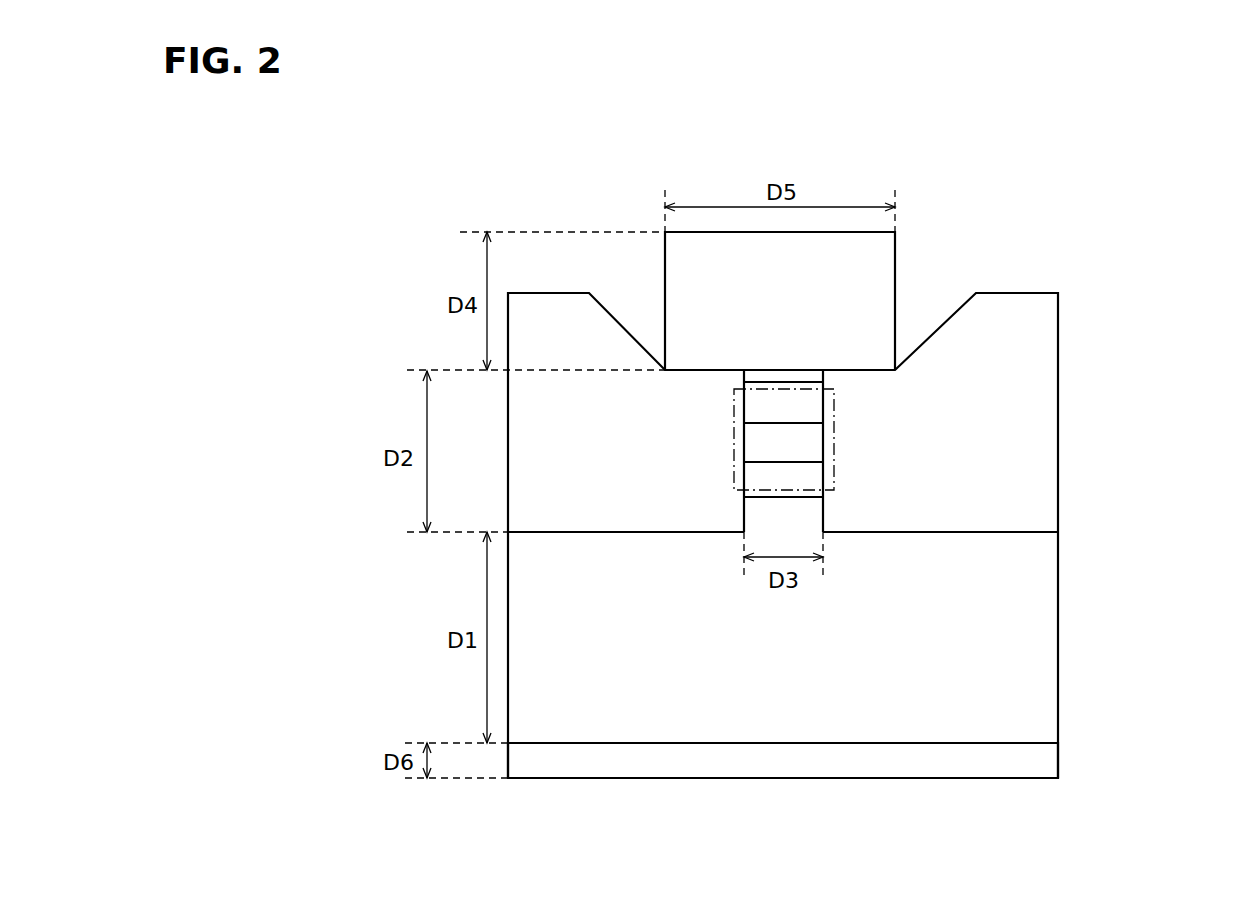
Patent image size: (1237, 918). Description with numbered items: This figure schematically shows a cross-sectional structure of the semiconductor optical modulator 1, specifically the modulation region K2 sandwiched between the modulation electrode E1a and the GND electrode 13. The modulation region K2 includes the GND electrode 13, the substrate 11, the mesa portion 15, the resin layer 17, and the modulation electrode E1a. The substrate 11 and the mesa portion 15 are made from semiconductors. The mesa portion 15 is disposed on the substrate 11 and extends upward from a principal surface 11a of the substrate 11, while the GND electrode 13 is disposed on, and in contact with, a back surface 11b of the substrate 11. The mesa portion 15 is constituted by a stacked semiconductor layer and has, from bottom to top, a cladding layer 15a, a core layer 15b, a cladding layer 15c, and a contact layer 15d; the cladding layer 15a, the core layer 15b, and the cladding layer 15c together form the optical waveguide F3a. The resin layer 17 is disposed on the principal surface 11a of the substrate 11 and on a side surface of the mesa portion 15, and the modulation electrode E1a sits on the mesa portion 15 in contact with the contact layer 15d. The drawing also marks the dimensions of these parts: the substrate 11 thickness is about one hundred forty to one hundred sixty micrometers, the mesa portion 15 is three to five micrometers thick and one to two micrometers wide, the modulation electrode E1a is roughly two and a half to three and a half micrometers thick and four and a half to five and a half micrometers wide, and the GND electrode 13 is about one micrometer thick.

The semiconductor optical modulator 1 is at (1155, 201).
The substrate 11 is at (1047, 604).
The principal surface 11a is at (1047, 532).
The back surface 11b is at (1043, 746).
The GND electrode 13 is at (1008, 766).
The mesa portion 15 is at (726, 375).
The cladding layer 15a is at (815, 478).
The core layer 15b is at (815, 440).
The cladding layer 15c is at (756, 403).
The contact layer 15d is at (793, 372).
The resin layer 17 is at (520, 428).
The modulation electrode E1a is at (875, 280).
The optical waveguide F3a is at (835, 412).
The modulation region K2 is at (1134, 290).